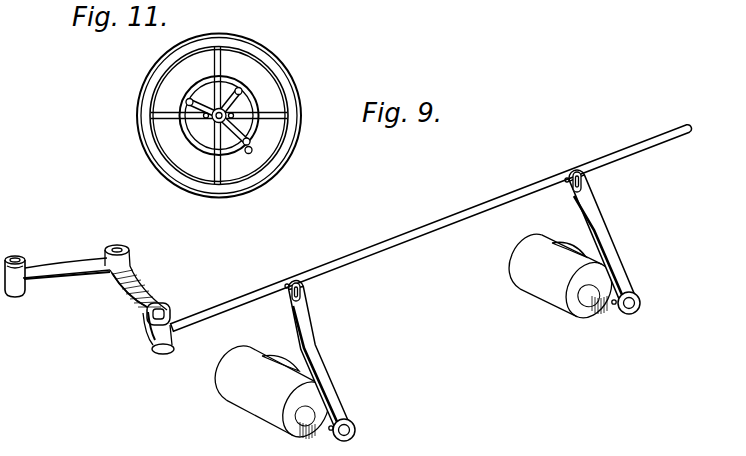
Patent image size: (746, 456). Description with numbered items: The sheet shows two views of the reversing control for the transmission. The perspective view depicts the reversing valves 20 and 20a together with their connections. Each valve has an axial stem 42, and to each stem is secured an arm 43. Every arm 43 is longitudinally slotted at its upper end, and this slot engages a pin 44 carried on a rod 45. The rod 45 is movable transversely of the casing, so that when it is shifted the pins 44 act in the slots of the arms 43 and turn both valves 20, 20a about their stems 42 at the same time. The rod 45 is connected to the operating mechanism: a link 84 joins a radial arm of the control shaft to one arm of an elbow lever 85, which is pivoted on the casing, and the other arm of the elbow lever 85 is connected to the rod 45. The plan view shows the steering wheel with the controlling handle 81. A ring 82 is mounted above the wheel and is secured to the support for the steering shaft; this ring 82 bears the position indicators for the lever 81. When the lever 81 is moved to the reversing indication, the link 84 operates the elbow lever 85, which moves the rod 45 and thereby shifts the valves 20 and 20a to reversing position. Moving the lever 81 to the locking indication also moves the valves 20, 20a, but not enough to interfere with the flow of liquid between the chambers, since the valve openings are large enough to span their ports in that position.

In FIG. 9, the reversing valve 20 is at (523, 295).
In FIG. 9, the reversing valve 20a is at (237, 406).
In FIG. 9, the axial stem 42 is at (356, 421).
In FIG. 9, the arm 43 is at (318, 342).
In FIG. 9, the pin 44 is at (303, 293).
In FIG. 9, the rod 45 is at (402, 227).
In FIG. 11, the handle 81 is at (247, 143).
In FIG. 11, the ring 82 is at (258, 97).
In FIG. 9, the link 84 is at (0, 246).
In FIG. 9, the elbow lever 85 is at (142, 280).